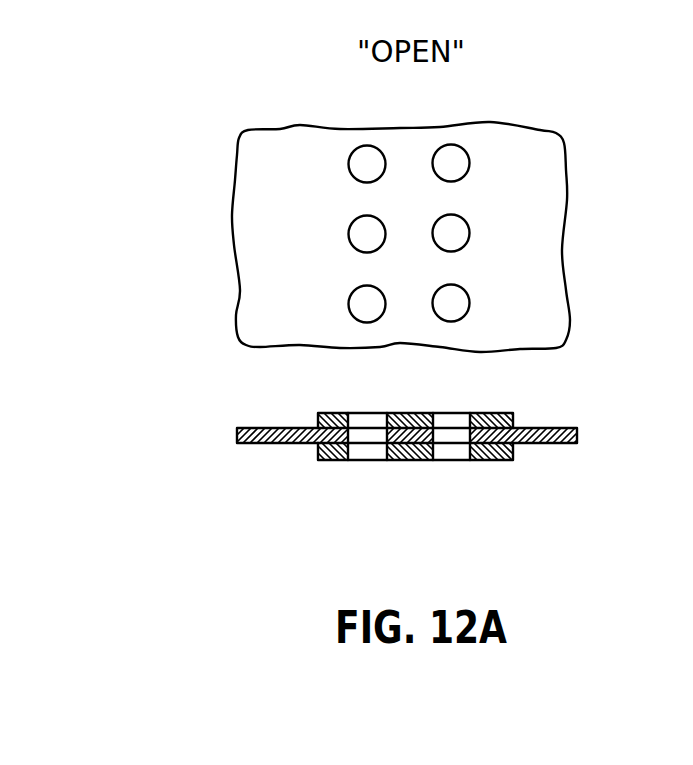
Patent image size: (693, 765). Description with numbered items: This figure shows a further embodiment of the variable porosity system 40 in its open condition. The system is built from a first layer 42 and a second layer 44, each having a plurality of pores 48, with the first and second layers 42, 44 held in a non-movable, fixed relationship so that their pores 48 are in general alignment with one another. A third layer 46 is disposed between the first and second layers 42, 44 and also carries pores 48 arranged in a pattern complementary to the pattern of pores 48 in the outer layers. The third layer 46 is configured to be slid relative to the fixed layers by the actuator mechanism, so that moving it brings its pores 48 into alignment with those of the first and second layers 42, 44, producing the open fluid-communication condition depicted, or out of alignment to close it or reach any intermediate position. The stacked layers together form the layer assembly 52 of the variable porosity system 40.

The variable porosity system 40 is at (206, 116).
The first layer 42 is at (513, 418).
The second layer 44 is at (513, 452).
The third layer 46 is at (255, 222).
The pore 48 is at (443, 222).
The layer assembly 52 is at (212, 408).